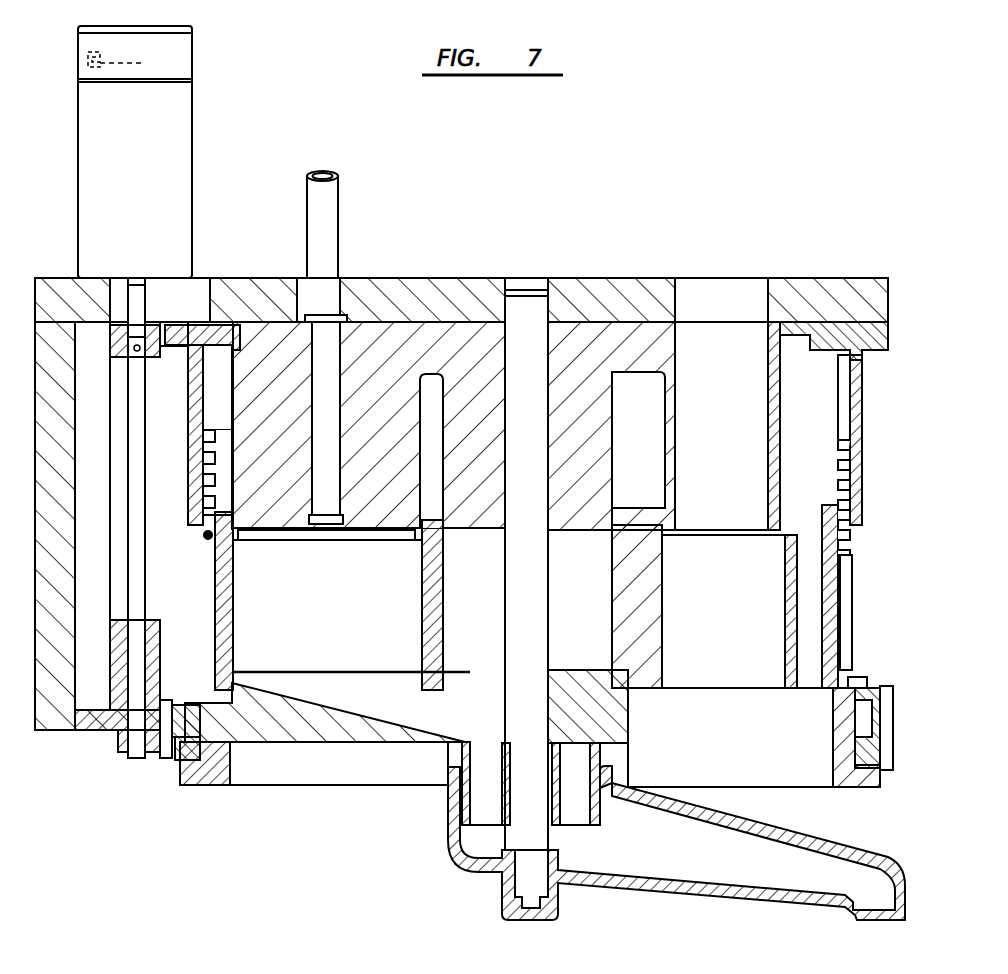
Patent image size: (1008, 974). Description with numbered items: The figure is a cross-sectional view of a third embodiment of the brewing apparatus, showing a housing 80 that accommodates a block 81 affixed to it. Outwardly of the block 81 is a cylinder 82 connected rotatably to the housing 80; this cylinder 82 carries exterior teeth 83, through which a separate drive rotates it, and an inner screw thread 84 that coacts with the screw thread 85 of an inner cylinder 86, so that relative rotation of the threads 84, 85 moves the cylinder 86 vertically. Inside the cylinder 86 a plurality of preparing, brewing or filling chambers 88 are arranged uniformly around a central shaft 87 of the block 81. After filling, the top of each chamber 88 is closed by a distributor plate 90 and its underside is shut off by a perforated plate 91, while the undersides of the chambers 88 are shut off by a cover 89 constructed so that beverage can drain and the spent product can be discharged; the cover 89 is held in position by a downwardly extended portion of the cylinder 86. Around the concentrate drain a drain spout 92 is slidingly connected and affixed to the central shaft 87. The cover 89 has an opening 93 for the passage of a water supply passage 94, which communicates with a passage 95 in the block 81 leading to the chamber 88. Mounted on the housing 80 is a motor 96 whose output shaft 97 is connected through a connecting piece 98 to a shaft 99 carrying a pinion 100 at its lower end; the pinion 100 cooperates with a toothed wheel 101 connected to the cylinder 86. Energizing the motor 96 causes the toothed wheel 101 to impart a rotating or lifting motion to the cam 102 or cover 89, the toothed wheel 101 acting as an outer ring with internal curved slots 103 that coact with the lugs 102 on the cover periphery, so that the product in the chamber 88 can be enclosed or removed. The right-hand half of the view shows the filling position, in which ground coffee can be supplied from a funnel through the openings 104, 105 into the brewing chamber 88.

The housing 80 is at (420, 298).
The block 81 is at (450, 340).
The cylinder 82 is at (215, 332).
The teeth 83 is at (186, 322).
The screw thread 84 is at (196, 462).
The screw thread 85 is at (204, 536).
The cylinder 86 is at (212, 600).
The central shaft 87 is at (530, 300).
The brewing chamber 88 is at (328, 613).
The cover 89 is at (300, 742).
The distributor plate 90 is at (290, 541).
The perforated plate 91 is at (380, 678).
The drain spout 92 is at (700, 893).
The opening 93 is at (332, 352).
The water supply passage 94 is at (330, 208).
The passage 95 is at (338, 358).
The motor 96 is at (178, 104).
The output shaft 97 is at (135, 292).
The connecting piece 98 is at (118, 354).
The shaft 99 is at (128, 411).
The pinion 100 is at (120, 624).
The toothed wheel 101 is at (158, 746).
The cam 102 is at (182, 742).
The curved slot 103 is at (205, 752).
The opening 104 is at (680, 300).
The opening 105 is at (676, 452).